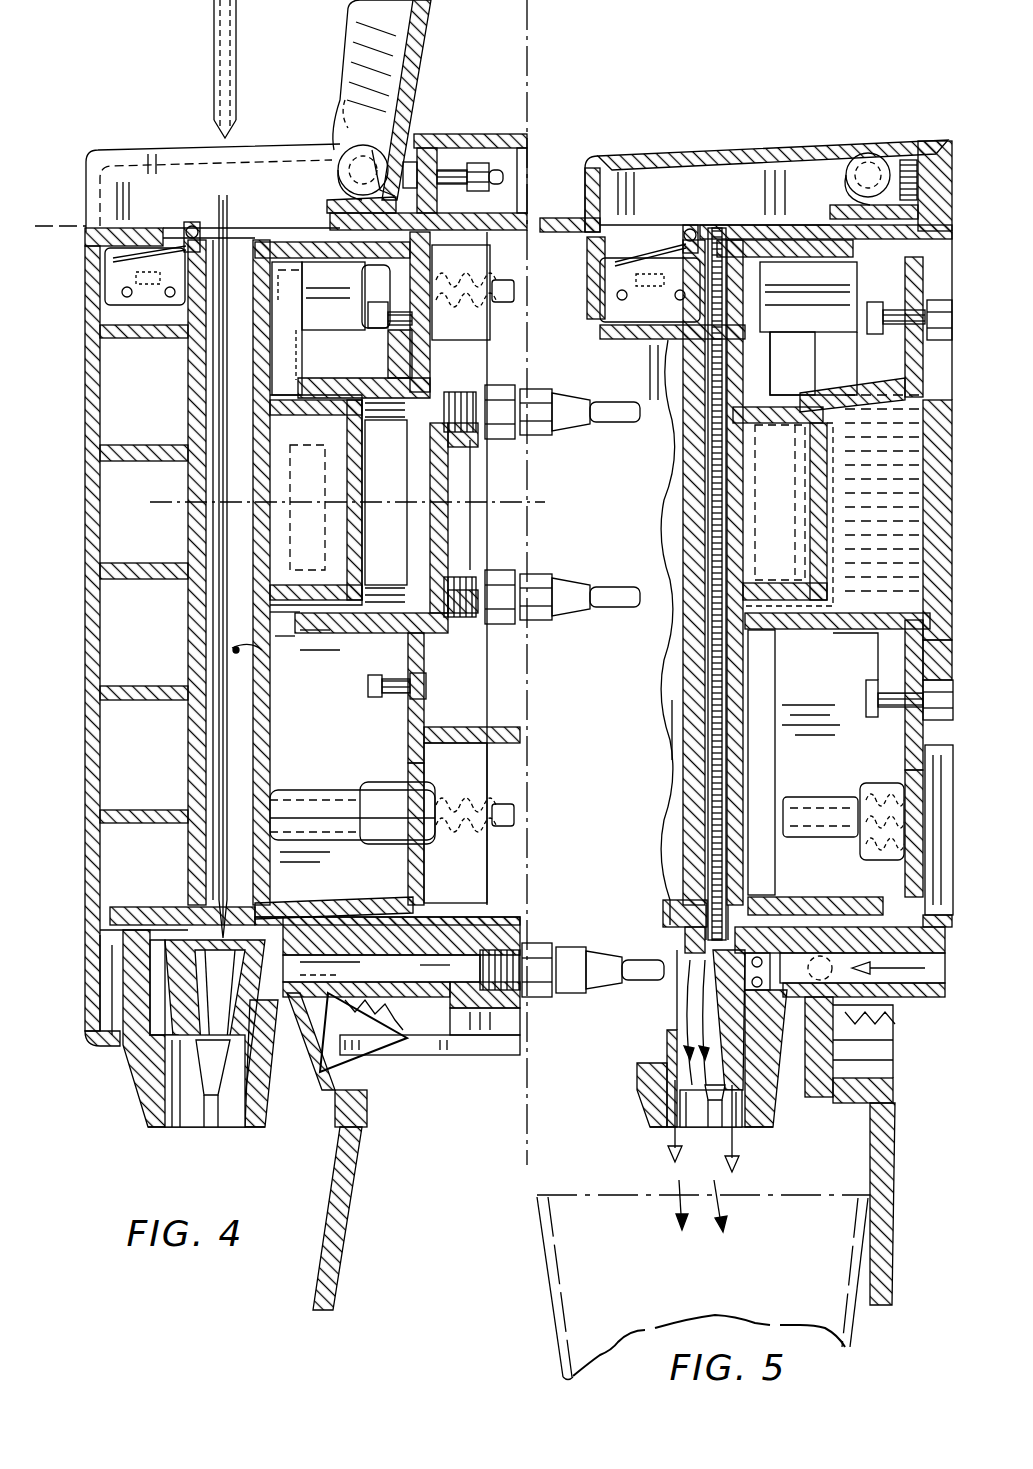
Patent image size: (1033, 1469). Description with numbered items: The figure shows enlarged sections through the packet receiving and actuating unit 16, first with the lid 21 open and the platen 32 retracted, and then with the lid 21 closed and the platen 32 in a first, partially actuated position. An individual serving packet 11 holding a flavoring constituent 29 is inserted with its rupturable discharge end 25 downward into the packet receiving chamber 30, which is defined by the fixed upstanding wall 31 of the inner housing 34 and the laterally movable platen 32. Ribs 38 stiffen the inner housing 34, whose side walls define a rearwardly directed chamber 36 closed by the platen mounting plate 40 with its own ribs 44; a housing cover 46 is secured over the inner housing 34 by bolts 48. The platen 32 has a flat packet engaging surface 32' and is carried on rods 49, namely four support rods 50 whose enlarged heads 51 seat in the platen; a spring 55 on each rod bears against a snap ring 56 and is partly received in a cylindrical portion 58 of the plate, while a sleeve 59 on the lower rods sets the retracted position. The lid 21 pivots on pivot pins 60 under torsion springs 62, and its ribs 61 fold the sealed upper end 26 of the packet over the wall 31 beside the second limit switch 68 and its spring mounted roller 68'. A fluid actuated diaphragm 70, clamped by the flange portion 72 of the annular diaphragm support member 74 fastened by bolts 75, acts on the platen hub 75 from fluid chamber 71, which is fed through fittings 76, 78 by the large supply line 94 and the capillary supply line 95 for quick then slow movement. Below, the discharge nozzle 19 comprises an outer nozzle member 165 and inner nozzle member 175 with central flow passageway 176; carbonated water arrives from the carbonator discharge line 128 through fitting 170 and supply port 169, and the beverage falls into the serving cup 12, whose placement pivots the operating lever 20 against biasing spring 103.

In FIG. 4, the individual serving packet 11 is at (206, 38).
In FIG. 5, the individual serving packet 11 is at (692, 740).
In FIG. 5, the serving cup 12 is at (556, 1340).
In FIG. 4, the packet receiving and actuating unit 16 is at (470, 130).
In FIG. 5, the packet receiving and actuating unit 16 is at (933, 128).
In FIG. 4, the discharge nozzle 19 is at (128, 1104).
In FIG. 5, the discharge nozzle 19 is at (640, 1115).
In FIG. 4, the operating lever 20 is at (358, 1168).
In FIG. 5, the operating lever 20 is at (872, 1152).
In FIG. 4, the lid 21 is at (420, 12).
In FIG. 5, the lid 21 is at (678, 156).
In FIG. 4, the rupturable discharge end 25 is at (205, 908).
In FIG. 5, the rupturable discharge end 25 is at (680, 906).
In FIG. 4, the sealed peripheral upper end 26 is at (226, 214).
In FIG. 5, the flavoring constituent 29 is at (712, 832).
In FIG. 4, the packet receiving chamber 30 is at (285, 362).
In FIG. 4, the fixed upstanding wall 31 is at (200, 376).
In FIG. 5, the fixed upstanding wall 31 is at (690, 380).
In FIG. 4, the platen 32 is at (305, 655).
In FIG. 5, the platen 32 is at (696, 572).
In FIG. 4, the packet engaging surface 32' is at (283, 657).
In FIG. 5, the packet engaging surface 32' is at (792, 737).
In FIG. 4, the inner housing 34 is at (175, 622).
In FIG. 5, the inner housing 34 is at (692, 654).
In FIG. 4, the rearwardly directed chamber 36 is at (405, 906).
In FIG. 4, the ribs 38 is at (115, 520).
In FIG. 5, the ribs 38 is at (668, 534).
In FIG. 4, the platen mounting plate 40 is at (470, 492).
In FIG. 4, the ribs 44 is at (478, 732).
In FIG. 4, the housing cover 46 is at (90, 358).
In FIG. 4, the bolts 48 is at (480, 140).
In FIG. 4, the rods 49 is at (318, 246).
In FIG. 5, the rods 49 is at (818, 906).
In FIG. 4, the support rods 50 is at (547, 812).
In FIG. 5, the support rods 50 is at (813, 353).
In FIG. 4, the enlarged heads 51 is at (282, 792).
In FIG. 5, the enlarged heads 51 is at (770, 274).
In FIG. 4, the spring 55 is at (464, 538).
In FIG. 4, the snap ring 56 is at (500, 282).
In FIG. 4, the cylindrical portions 58 is at (376, 786).
In FIG. 5, the cylindrical portions 58 is at (880, 285).
In FIG. 4, the sleeve 59 is at (311, 857).
In FIG. 5, the sleeve 59 is at (820, 804).
In FIG. 4, the pivot pins 60 is at (336, 138).
In FIG. 5, the pivot pins 60 is at (852, 150).
In FIG. 4, the ribs 61 is at (345, 56).
In FIG. 5, the ribs 61 is at (728, 194).
In FIG. 4, the torsion springs 62 is at (345, 104).
In FIG. 5, the torsion springs 62 is at (884, 156).
In FIG. 4, the second limit switch 68 is at (109, 276).
In FIG. 5, the second limit switch 68 is at (623, 279).
In FIG. 4, the spring mounted roller 68' is at (156, 218).
In FIG. 5, the spring mounted roller 68' is at (656, 219).
In FIG. 4, the fluid actuated diaphragm 70 is at (365, 486).
In FIG. 5, the fluid actuated diaphragm 70 is at (812, 520).
In FIG. 4, the fluid chamber 71 is at (400, 562).
In FIG. 5, the fluid chamber 71 is at (830, 476).
In FIG. 4, the flange portion 72 is at (372, 368).
In FIG. 5, the flange portion 72 is at (900, 356).
In FIG. 4, the annular diaphragm support member 74 is at (385, 502).
In FIG. 5, the annular diaphragm support member 74 is at (824, 506).
In FIG. 4, the bolts / cylindrical hub 75 is at (438, 336).
In FIG. 5, the bolts / cylindrical hub 75 is at (870, 318).
In FIG. 4, the fluid supply line fitting 76 is at (492, 392).
In FIG. 5, the fluid supply line fitting 76 is at (900, 425).
In FIG. 4, the fluid supply line fitting 78 is at (490, 582).
In FIG. 5, the fluid supply line fitting 78 is at (932, 592).
In FIG. 4, the pressurized fluid supply line 94 is at (612, 430).
In FIG. 4, the pressurized fluid supply line 95 is at (612, 615).
In FIG. 4, the biasing spring 103 is at (400, 1062).
In FIG. 4, the carbonator discharge line 128 is at (632, 1000).
In FIG. 4, the outer nozzle member 165 is at (135, 1052).
In FIG. 4, the carbonated water supply port 169 is at (498, 922).
In FIG. 4, the fitting 170 is at (520, 1000).
In FIG. 4, the inner nozzle member 175 is at (228, 1122).
In FIG. 5, the inner nozzle member 175 is at (665, 1058).
In FIG. 4, the central flow passageway 176 is at (215, 1028).
In FIG. 5, the central flow passageway 176 is at (690, 1030).